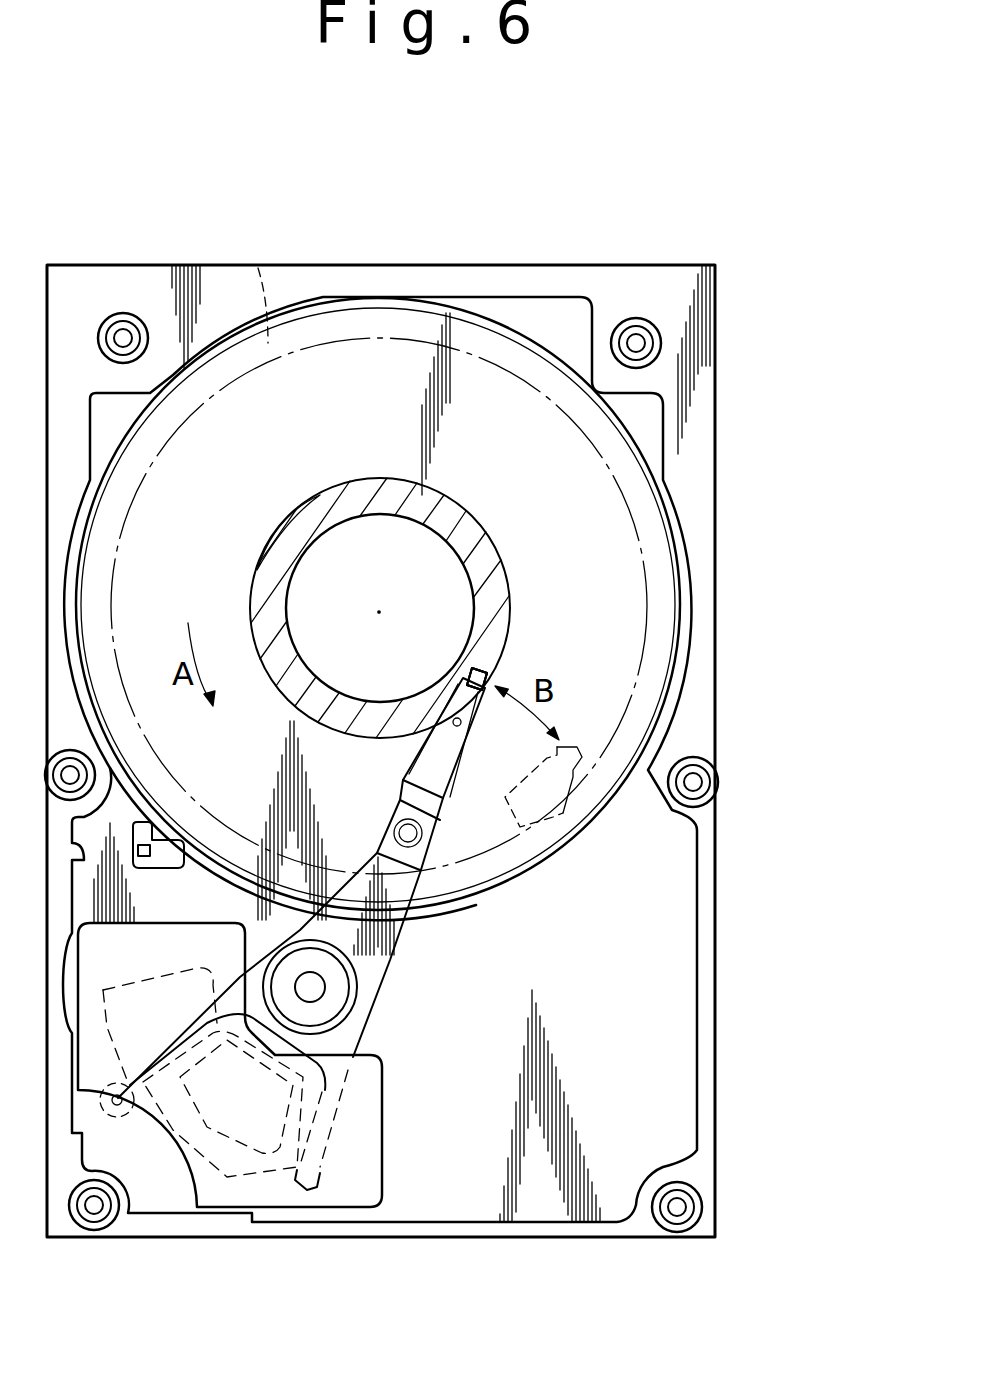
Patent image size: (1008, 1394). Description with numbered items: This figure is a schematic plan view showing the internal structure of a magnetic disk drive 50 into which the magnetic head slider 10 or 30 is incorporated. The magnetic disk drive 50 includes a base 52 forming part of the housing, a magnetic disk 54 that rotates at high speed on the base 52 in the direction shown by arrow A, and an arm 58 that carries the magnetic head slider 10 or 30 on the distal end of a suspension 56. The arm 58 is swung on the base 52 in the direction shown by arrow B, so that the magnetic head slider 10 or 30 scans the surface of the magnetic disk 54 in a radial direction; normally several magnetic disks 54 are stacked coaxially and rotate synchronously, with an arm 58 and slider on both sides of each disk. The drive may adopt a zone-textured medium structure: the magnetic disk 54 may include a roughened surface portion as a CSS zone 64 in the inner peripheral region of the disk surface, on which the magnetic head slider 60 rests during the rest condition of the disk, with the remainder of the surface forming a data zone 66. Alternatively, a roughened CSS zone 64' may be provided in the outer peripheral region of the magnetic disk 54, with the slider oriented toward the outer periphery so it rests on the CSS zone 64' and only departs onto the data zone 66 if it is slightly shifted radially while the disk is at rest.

The magnetic disk drive 50 is at (409, 243).
The base 52 is at (710, 1097).
The magnetic disk 54 is at (650, 681).
The suspension 56 is at (428, 795).
The arm 58 is at (365, 960).
The CSS zone 64 is at (525, 575).
The CSS zone 64' is at (238, 264).
The data zone 66 is at (613, 572).
The magnetic head slider 10 is at (490, 668).
The magnetic head slider 30 is at (477, 679).
The magnetic head slider 60 is at (477, 679).